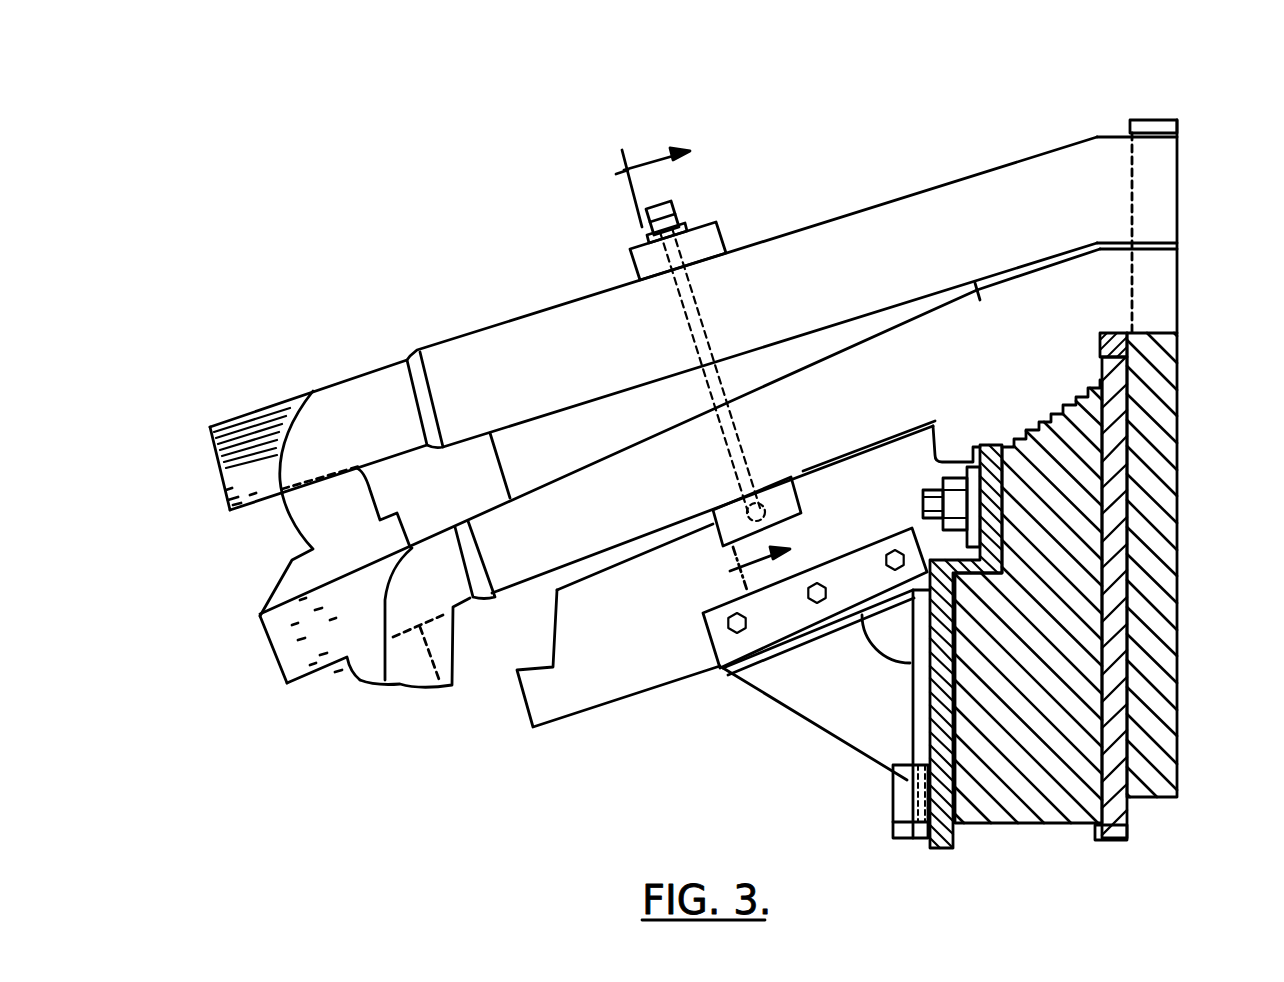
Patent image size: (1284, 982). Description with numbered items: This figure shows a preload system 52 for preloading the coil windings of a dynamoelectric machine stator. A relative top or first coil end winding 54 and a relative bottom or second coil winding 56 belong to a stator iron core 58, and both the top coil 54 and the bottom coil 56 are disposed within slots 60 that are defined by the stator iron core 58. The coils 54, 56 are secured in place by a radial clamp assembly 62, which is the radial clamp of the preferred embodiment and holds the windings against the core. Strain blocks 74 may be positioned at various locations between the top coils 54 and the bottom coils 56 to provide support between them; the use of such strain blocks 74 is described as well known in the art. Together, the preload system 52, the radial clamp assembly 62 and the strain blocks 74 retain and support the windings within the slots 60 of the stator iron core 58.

The preload system 52 is at (615, 93).
The top coil end winding 54 is at (860, 260).
The bottom coil winding 56 is at (860, 407).
The stator iron core 58 is at (1027, 827).
The slots 60 is at (1152, 333).
The radial clamp assembly 62 is at (703, 232).
The strain blocks 74 is at (907, 318).